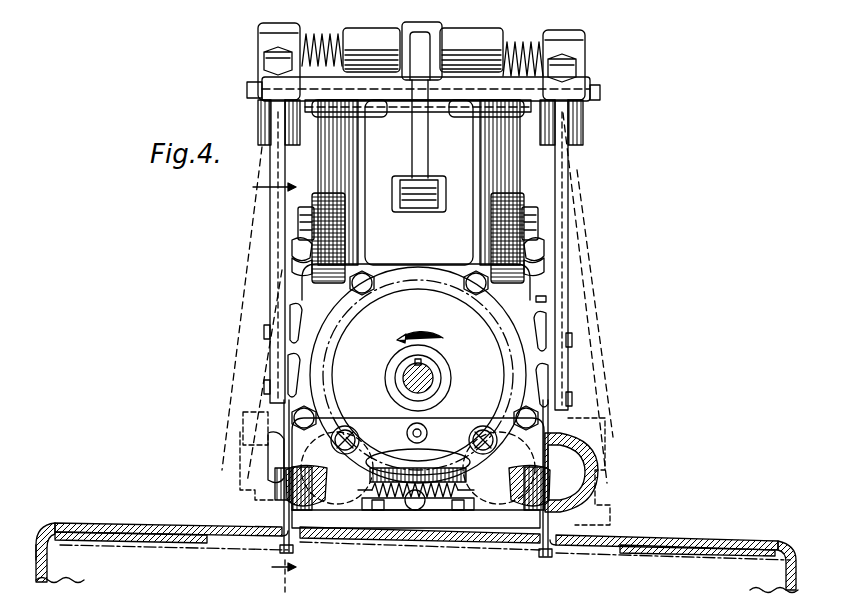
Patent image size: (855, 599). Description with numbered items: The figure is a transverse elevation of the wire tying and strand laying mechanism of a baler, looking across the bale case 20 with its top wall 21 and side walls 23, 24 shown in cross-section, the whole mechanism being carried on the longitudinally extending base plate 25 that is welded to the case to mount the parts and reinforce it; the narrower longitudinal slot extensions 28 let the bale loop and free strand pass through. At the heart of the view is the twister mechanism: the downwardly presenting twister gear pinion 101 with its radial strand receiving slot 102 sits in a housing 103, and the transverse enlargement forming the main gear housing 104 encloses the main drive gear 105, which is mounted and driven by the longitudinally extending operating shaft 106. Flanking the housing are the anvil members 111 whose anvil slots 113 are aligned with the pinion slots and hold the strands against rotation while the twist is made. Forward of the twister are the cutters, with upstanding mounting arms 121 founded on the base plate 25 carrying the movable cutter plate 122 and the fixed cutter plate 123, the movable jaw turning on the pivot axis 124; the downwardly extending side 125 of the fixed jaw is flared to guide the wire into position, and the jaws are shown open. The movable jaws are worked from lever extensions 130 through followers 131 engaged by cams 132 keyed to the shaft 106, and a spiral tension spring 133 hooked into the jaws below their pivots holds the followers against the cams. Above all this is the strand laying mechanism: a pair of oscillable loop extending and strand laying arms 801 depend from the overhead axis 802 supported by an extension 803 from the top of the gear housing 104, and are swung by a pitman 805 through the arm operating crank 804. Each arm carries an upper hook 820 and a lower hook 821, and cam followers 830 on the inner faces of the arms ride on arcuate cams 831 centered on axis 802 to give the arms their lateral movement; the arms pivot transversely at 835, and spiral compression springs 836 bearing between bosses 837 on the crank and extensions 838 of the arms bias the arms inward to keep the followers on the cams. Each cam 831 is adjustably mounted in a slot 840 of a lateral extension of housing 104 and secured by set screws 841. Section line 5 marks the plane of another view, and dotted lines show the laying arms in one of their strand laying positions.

The section line 5- 5 is at (265, 385).
The bale case 20 is at (42, 530).
The top wall 21 is at (143, 543).
The side wall 23 is at (46, 564).
The side wall 24 is at (788, 576).
The base plate 25 is at (142, 512).
The longitudinal extensions 28 is at (290, 538).
The twister gear pinion 101 is at (235, 462).
The strand receiving slot 102 is at (280, 530).
The housing 103 is at (268, 443).
The main gear housing 104 is at (432, 302).
The main drive gear 105 is at (397, 290).
The operating shaft 106 is at (430, 370).
The anvil member 111 is at (275, 478).
The anvil slot 113 is at (283, 488).
The mounting arms 121 is at (355, 505).
The movable cutter plate 122 is at (360, 520).
The fixed cutter plate 123 is at (268, 433).
The pivot axis 124 is at (470, 420).
The downwardly extending side 125 is at (272, 460).
The lever extensions 130 is at (460, 400).
The followers 131 is at (413, 463).
The cams 132 is at (392, 365).
The spiral tension spring 133 is at (432, 528).
The loop extending and strand laying arms 801 is at (270, 205).
The overhead axis 802 is at (584, 101).
The extension 803 is at (474, 168).
The arm operating crank 804 is at (413, 168).
The pitman 805 is at (419, 203).
The hook 820 is at (296, 313).
The lower hook 821 is at (283, 386).
The cam followers 830 is at (300, 225).
The arcuate cams 831 is at (300, 262).
The transverse pivot 835 is at (263, 60).
The spiral compression spring 836 is at (520, 40).
The bosses 837 is at (382, 23).
The extensions 838 is at (587, 45).
The slot 840 is at (556, 296).
The set screws 841 is at (488, 233).